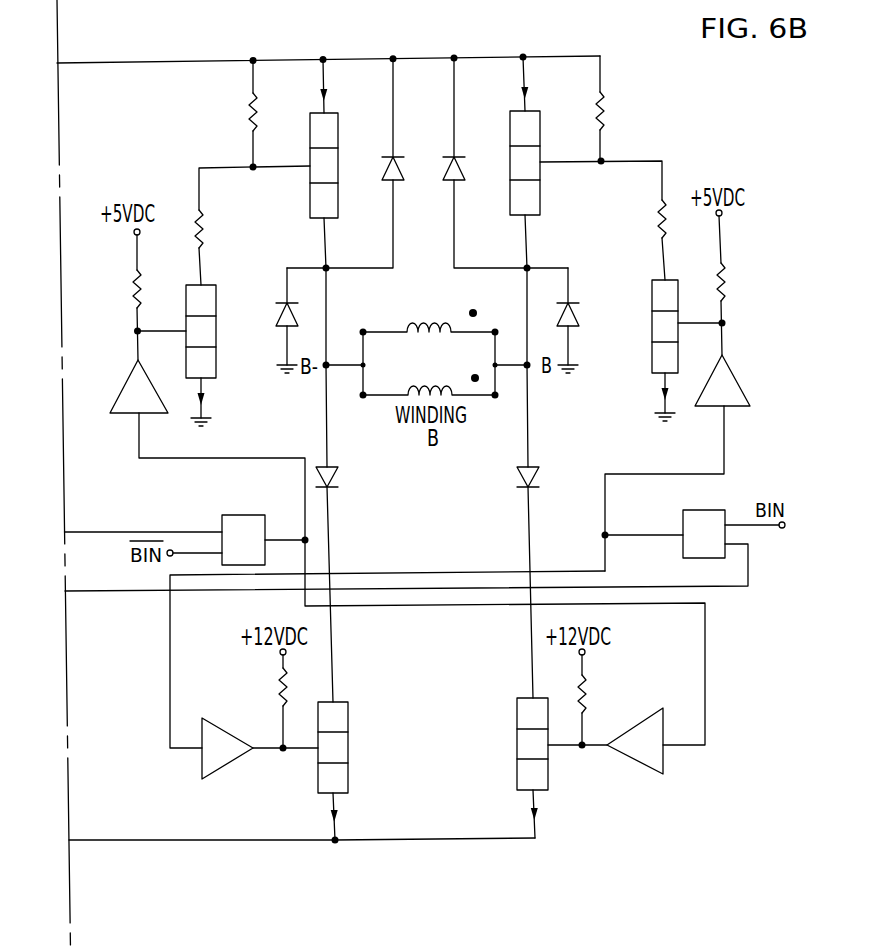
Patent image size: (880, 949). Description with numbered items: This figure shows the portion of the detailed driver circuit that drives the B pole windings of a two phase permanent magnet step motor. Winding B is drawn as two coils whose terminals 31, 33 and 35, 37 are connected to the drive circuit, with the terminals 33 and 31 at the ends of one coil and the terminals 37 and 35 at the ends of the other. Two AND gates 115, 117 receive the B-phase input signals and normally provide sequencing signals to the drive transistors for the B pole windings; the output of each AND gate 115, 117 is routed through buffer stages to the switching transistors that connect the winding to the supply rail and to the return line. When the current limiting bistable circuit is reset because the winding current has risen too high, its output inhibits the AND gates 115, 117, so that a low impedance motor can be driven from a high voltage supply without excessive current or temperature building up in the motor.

The B pole winding terminal 31 is at (496, 330).
The B pole winding terminal 33 is at (365, 330).
The B pole winding terminal 35 is at (494, 397).
The B pole winding terminal 37 is at (364, 397).
The AND gate 115 is at (253, 515).
The AND gate 117 is at (690, 510).